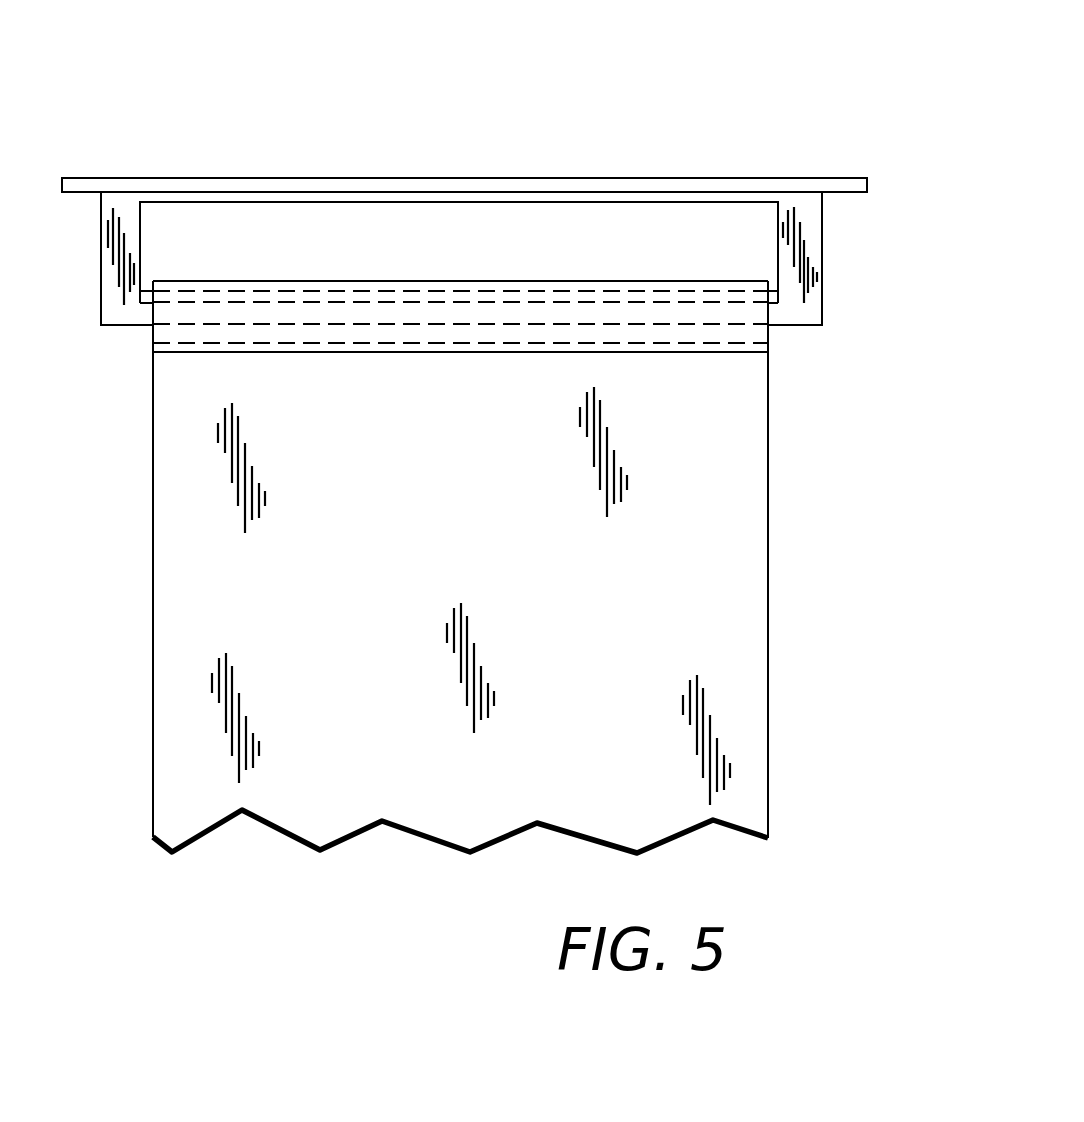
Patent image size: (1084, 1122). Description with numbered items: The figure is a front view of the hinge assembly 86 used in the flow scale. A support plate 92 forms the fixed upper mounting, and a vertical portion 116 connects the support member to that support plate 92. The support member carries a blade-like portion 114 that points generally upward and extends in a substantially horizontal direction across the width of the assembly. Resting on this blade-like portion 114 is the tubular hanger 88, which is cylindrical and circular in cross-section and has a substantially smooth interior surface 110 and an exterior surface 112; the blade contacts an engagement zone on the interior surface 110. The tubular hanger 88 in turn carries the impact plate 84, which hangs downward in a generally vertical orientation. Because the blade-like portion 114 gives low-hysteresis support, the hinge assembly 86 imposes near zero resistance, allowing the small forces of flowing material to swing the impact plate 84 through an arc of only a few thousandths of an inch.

The impact plate 84 is at (597, 558).
The hinge assembly 86 is at (651, 152).
The tubular hanger 88 is at (543, 282).
The support plate 92 is at (818, 178).
The interior surface 110 is at (153, 334).
The exterior surface 112 is at (287, 282).
The blade-like portion 114 is at (147, 290).
The vertical portion 116 is at (820, 268).